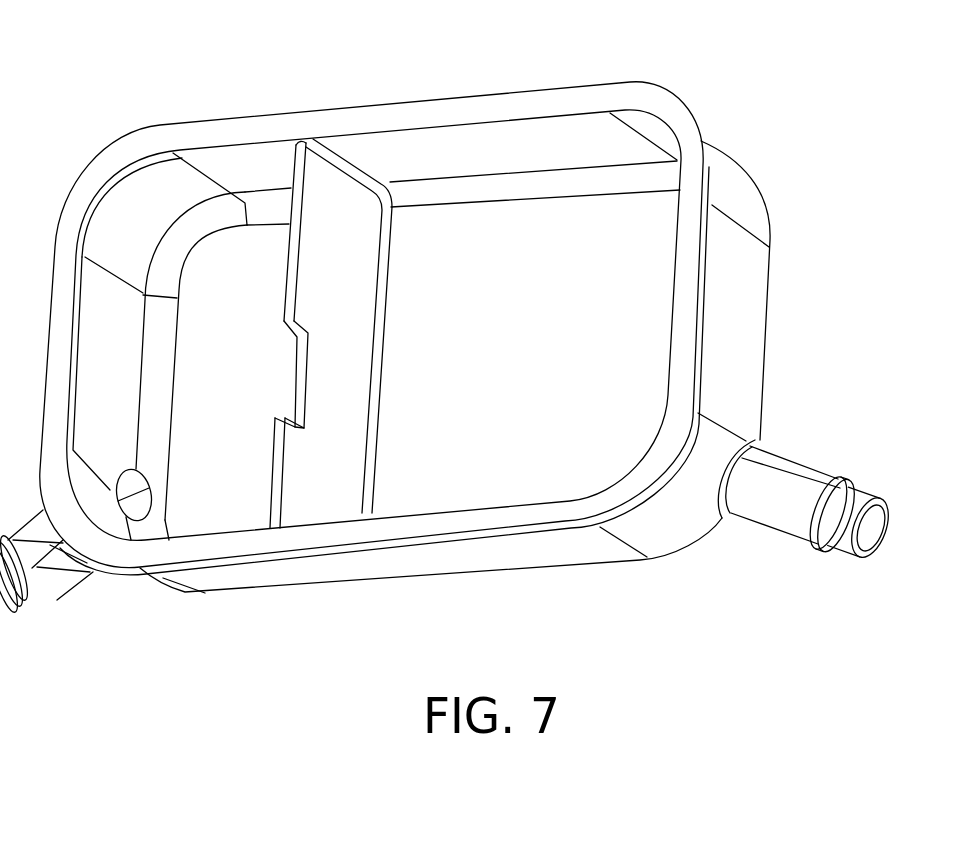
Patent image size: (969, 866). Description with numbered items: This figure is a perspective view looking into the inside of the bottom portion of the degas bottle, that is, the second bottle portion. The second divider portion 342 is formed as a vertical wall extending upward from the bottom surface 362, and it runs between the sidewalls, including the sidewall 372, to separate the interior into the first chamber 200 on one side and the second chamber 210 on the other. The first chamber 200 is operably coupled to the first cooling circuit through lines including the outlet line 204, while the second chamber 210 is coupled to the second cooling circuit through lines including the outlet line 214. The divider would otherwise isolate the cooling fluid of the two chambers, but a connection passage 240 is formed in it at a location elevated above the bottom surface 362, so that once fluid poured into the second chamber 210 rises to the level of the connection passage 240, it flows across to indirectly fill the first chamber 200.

The first chamber 200 is at (134, 201).
The outlet line 204 is at (42, 592).
The second chamber 210 is at (611, 200).
The outlet line 214 is at (795, 513).
The connection passage 240 is at (319, 378).
The second divider portion 342 is at (317, 260).
The bottom surface 362 is at (495, 407).
The sidewall 372 is at (468, 145).